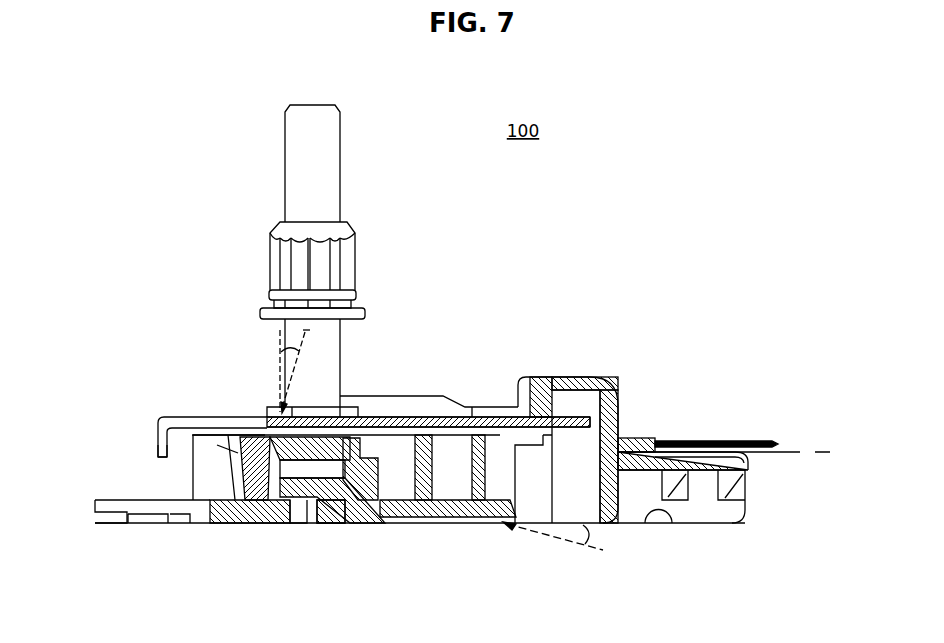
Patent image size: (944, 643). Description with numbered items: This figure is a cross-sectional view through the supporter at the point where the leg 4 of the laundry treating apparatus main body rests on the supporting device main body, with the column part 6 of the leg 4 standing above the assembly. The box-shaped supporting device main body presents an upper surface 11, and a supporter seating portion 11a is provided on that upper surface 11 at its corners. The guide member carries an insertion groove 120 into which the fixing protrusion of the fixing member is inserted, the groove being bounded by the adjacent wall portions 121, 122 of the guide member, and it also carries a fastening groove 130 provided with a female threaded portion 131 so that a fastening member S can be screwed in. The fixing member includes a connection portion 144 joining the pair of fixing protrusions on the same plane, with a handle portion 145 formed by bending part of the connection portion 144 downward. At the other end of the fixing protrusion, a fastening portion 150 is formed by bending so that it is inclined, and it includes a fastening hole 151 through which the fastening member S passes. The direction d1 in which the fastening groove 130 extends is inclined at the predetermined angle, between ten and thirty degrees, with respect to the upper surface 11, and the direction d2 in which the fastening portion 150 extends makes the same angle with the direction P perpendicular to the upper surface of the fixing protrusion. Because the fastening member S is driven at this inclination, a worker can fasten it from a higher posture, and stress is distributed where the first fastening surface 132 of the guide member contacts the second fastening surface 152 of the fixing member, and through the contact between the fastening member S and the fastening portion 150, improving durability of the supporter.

The leg 4 is at (342, 135).
The column part 6 is at (333, 381).
The direction perpendicular to upper surface of fixing protrusion P is at (278, 342).
The direction in which the fastening portion extends d2 is at (307, 333).
The direction in which the fastening groove extends d1 is at (542, 532).
The connection portion 144 is at (216, 418).
The handle portion 145 is at (158, 443).
The fastening member S is at (232, 453).
The fastening hole 151 is at (250, 428).
The fastening groove 130 is at (320, 515).
The female threaded portion 131 is at (323, 520).
The second fastening surface 152 is at (277, 523).
The first fastening surface 132 is at (282, 556).
The fastening portion 150 is at (237, 523).
The hook leg 122 is at (520, 408).
The hook 121 is at (556, 412).
The insertion groove 120 is at (618, 436).
The upper surface 11 is at (790, 452).
The supporter seating portion 11a is at (650, 525).